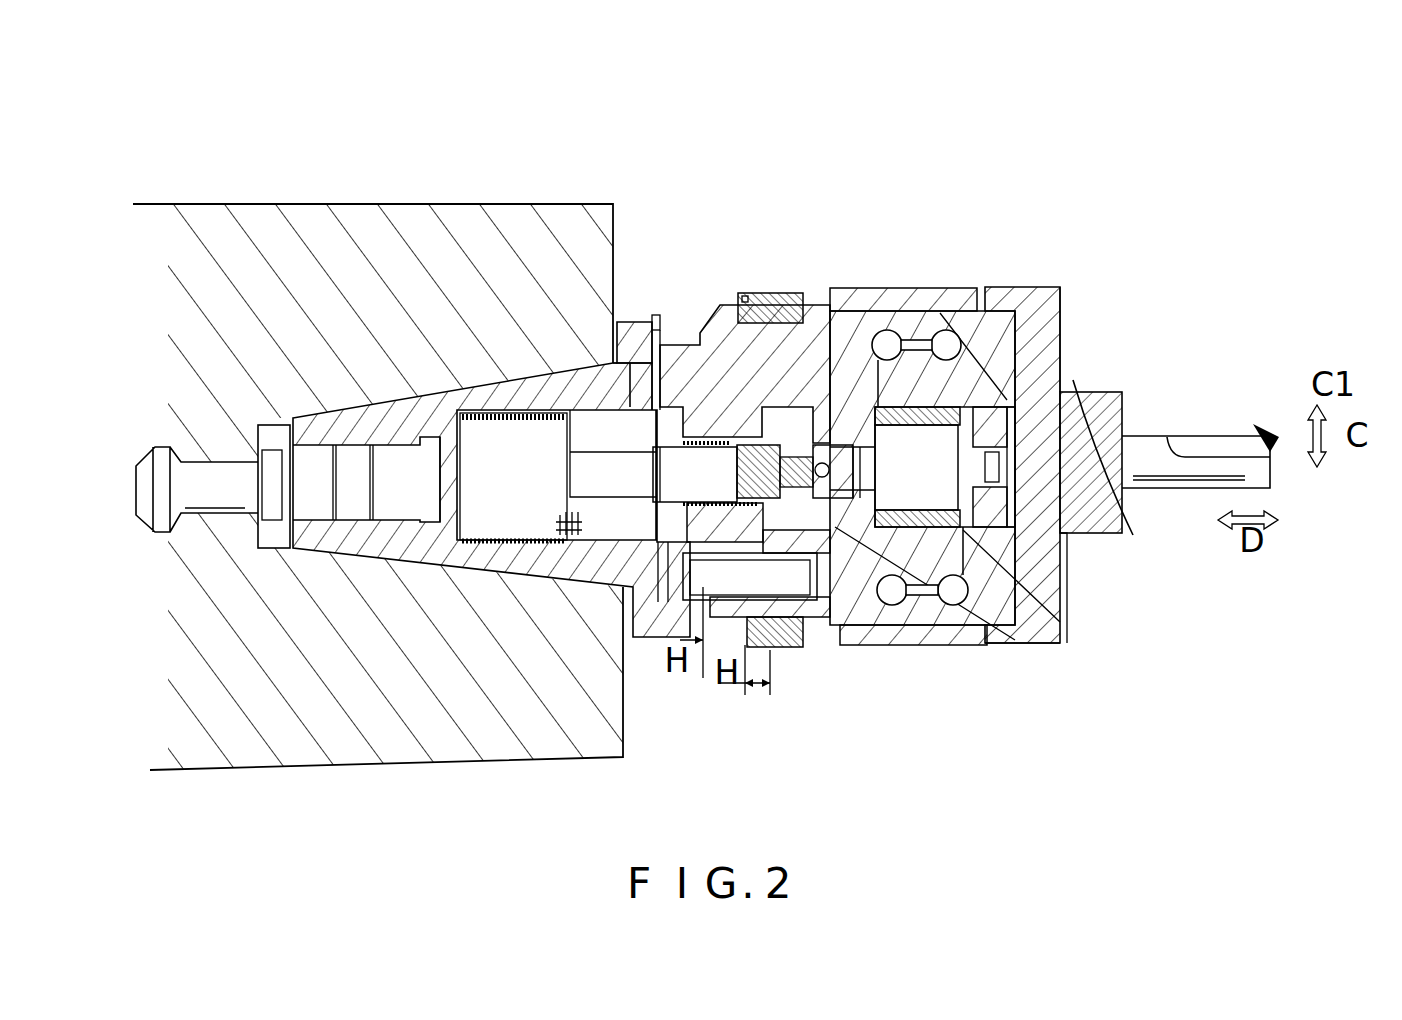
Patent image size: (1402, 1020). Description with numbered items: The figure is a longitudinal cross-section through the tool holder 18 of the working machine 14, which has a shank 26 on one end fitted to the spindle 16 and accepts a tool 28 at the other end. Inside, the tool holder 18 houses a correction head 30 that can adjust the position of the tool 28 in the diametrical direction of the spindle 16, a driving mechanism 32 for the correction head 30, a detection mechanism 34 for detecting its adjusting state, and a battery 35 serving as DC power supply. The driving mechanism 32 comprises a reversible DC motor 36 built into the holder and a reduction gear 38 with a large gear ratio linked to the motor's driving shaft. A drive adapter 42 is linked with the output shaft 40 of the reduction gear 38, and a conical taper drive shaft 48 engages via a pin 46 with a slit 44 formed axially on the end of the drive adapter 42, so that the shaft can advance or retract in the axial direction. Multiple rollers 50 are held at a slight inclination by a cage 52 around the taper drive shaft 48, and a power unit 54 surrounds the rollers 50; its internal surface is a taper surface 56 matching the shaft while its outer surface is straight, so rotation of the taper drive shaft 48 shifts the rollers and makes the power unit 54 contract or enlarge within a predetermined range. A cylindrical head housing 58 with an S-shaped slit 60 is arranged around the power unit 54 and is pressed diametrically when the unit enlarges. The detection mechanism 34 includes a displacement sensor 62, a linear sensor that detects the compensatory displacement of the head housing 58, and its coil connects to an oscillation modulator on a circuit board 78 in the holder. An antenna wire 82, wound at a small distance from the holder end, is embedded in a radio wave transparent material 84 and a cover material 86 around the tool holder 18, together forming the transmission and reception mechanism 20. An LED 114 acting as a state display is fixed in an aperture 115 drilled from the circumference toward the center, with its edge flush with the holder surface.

The machine tool spindle 14 is at (178, 200).
The spindle 16 is at (370, 222).
The tool holder 18 is at (858, 254).
The transmission and reception mechanism 20 is at (790, 286).
The shank 26 is at (343, 547).
The tool 28 is at (1153, 447).
The correction head 30 is at (897, 275).
The driving mechanism 32 is at (583, 425).
The detection mechanism 34 is at (1093, 410).
The battery 35 is at (697, 573).
The DC motor 36 is at (612, 462).
The reduction gear 38 is at (617, 362).
The output shaft 40 is at (877, 655).
The drive adapter 42 is at (674, 330).
The slit 44 is at (833, 437).
The pin 46 is at (920, 648).
The taper drive shaft 48 is at (1037, 643).
The rollers 50 is at (1060, 306).
The cage 52 is at (1062, 324).
The power unit 54 is at (1070, 646).
The taper surface 56 is at (897, 487).
The head housing 58 is at (1010, 296).
The S-shaped slit 60 is at (915, 325).
The displacement sensor 62 is at (977, 448).
The circuit board 78 is at (503, 450).
The antenna wire 82 is at (810, 647).
The radio wave transparent material 84 is at (833, 320).
The cover material 86 is at (815, 640).
The LED 114 is at (622, 322).
The aperture 115 is at (662, 328).